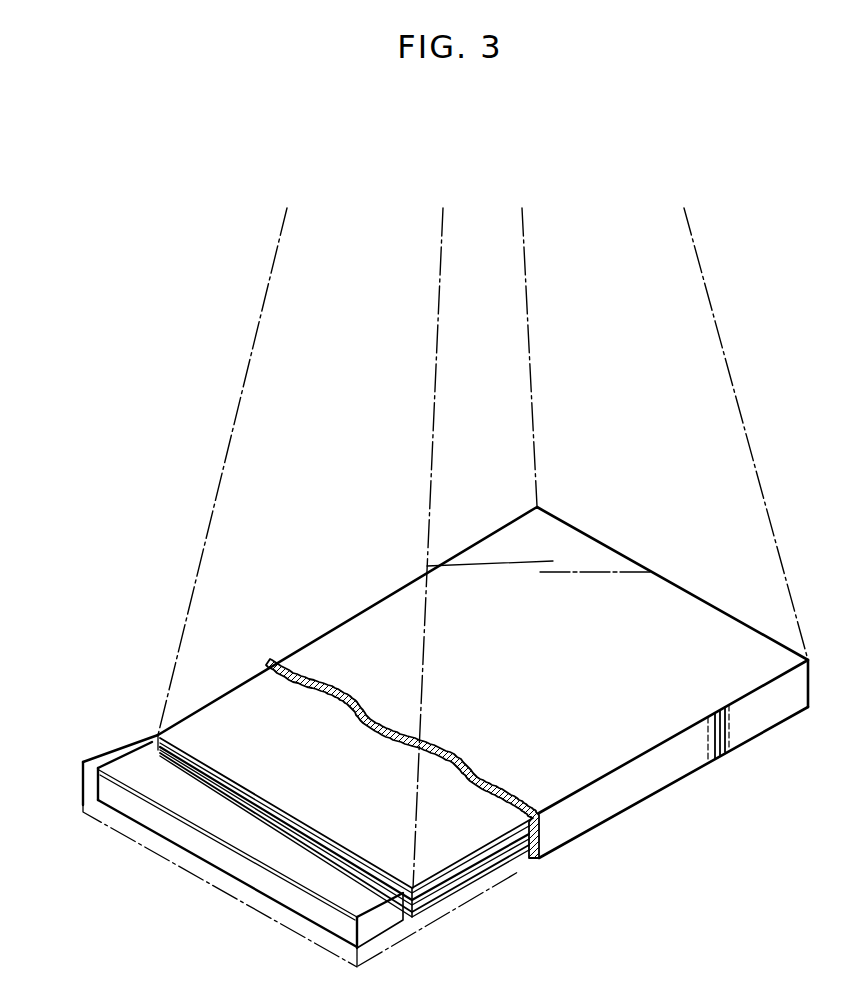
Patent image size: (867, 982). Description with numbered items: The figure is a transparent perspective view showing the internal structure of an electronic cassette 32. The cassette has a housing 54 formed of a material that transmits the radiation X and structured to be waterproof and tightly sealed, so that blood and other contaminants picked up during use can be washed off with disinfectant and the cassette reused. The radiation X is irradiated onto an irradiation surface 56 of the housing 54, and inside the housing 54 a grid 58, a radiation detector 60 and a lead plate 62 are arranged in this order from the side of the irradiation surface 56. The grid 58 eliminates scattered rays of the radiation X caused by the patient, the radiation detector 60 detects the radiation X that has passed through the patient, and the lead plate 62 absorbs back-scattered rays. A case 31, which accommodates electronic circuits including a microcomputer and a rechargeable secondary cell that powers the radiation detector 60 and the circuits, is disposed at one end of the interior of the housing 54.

The case 31 is at (175, 792).
The electronic cassette 32 is at (483, 721).
The housing 54 is at (633, 790).
The irradiation surface 56 is at (651, 576).
The grid 58 is at (482, 798).
The radiation detector 60 is at (512, 855).
The lead plate 62 is at (478, 882).
The radiation X is at (233, 436).